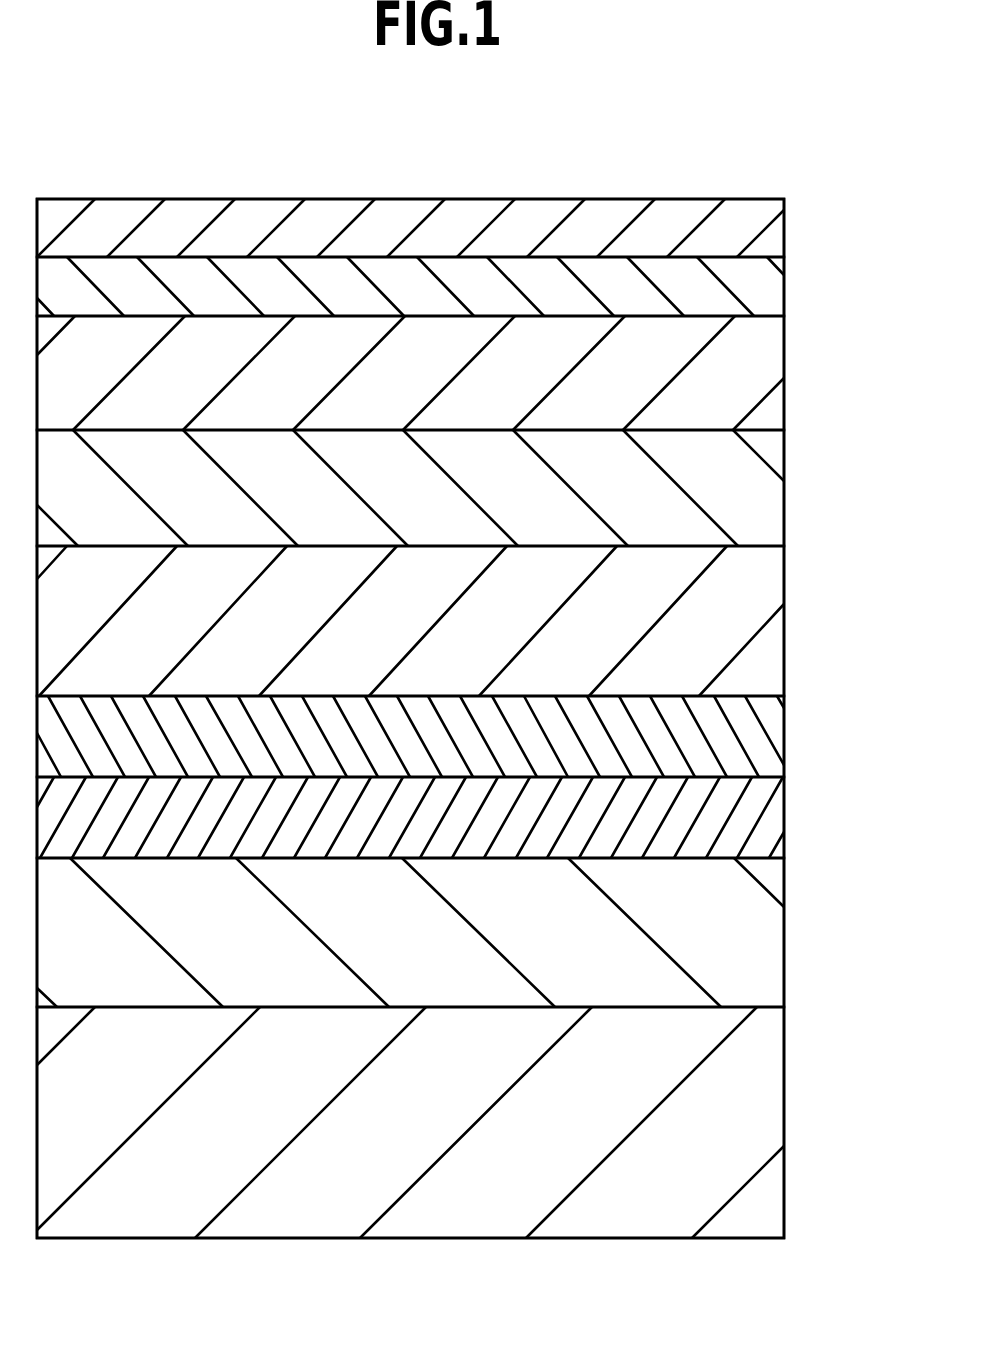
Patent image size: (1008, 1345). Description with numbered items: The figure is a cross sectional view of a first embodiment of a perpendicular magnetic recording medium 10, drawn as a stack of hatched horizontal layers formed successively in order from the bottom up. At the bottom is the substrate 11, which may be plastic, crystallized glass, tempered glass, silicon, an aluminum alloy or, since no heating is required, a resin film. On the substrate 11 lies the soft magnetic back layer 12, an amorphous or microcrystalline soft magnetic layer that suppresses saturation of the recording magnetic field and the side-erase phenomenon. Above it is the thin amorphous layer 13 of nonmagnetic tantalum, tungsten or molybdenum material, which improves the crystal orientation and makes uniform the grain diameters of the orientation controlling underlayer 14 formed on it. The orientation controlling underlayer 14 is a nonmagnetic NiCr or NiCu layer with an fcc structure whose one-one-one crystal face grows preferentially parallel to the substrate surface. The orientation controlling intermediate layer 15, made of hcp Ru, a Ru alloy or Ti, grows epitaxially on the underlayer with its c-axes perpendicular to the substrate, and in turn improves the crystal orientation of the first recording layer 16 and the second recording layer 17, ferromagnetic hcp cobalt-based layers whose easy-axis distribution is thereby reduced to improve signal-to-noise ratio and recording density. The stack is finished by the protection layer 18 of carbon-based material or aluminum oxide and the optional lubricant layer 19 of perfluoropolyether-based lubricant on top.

The perpendicular magnetic recording medium 10 is at (76, 171).
The substrate 11 is at (784, 1120).
The soft magnetic back layer 12 is at (784, 930).
The amorphous layer 13 is at (784, 813).
The orientation controlling underlayer 14 is at (784, 735).
The orientation controlling intermediate layer 15 is at (784, 617).
The first recording layer 16 is at (784, 497).
The second recording layer 17 is at (784, 370).
The protection layer 18 is at (784, 283).
The lubricant layer 19 is at (784, 223).